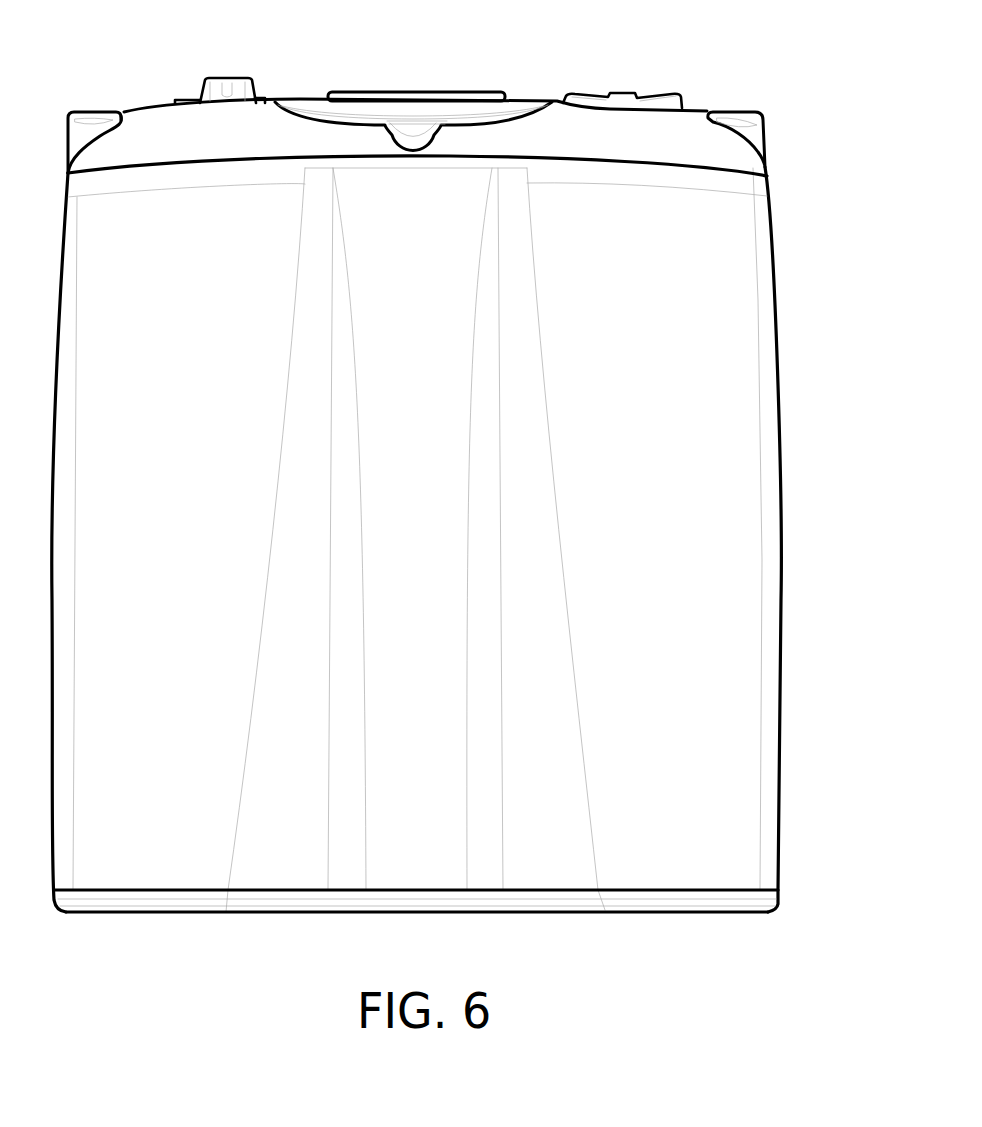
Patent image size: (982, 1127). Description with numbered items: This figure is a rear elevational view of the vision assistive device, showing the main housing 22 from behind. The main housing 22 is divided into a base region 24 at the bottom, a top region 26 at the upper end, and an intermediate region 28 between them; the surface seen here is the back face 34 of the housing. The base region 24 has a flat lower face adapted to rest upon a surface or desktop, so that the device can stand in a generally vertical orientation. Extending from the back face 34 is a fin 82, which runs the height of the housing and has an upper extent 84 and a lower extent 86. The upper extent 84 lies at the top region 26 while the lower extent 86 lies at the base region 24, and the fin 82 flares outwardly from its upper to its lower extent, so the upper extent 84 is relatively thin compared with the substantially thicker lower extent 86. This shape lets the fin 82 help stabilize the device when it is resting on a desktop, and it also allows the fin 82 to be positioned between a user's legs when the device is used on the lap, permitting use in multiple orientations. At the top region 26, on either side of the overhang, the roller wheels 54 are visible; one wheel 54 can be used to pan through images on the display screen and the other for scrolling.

The main housing 22 is at (742, 322).
The base region 24 is at (780, 882).
The top region 26 is at (765, 177).
The intermediate region 28 is at (770, 523).
The back face 34 is at (665, 492).
The roller wheels 54 is at (93, 131).
The fin 82 is at (436, 492).
The upper extent 84 is at (468, 185).
The lower extent 86 is at (558, 870).